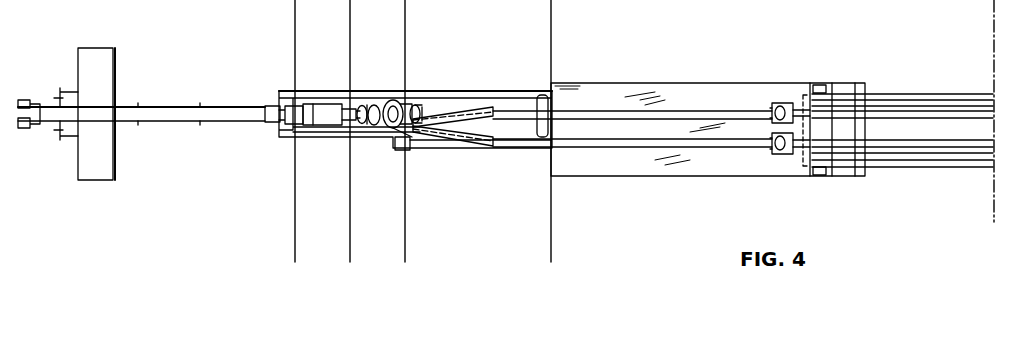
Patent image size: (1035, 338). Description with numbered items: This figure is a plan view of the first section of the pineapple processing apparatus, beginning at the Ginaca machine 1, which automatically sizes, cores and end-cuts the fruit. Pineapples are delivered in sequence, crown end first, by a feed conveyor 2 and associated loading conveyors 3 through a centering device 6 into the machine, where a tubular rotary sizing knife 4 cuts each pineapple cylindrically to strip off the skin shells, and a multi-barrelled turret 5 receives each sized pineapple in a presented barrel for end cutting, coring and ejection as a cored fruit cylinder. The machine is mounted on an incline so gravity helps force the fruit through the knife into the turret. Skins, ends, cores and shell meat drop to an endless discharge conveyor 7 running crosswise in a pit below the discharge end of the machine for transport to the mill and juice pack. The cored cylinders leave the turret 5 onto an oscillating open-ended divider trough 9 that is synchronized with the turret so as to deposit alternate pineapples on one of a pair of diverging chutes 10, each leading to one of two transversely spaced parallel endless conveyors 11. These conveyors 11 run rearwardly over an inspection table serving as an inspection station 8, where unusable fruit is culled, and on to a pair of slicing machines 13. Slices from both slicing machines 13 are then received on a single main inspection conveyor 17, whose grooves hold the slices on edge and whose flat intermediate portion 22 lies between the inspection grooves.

The Ginaca machine 1 is at (380, 82).
The feed conveyor 2 is at (171, 107).
The loading conveyors 3 is at (115, 64).
The tubular rotary sizing knife 4 is at (351, 107).
The multi-barrelled turret 5 is at (400, 102).
The centering device 6 is at (327, 122).
The endless discharge conveyor 7 is at (405, 52).
The inspection station 8 is at (691, 76).
The divider trough 9 is at (406, 150).
The diverging chutes 10 is at (452, 112).
The endless conveyors 11 is at (684, 111).
The slicing machines 13 is at (773, 106).
The inspection conveyor 17 is at (967, 141).
The intermediate portion 22 is at (905, 141).